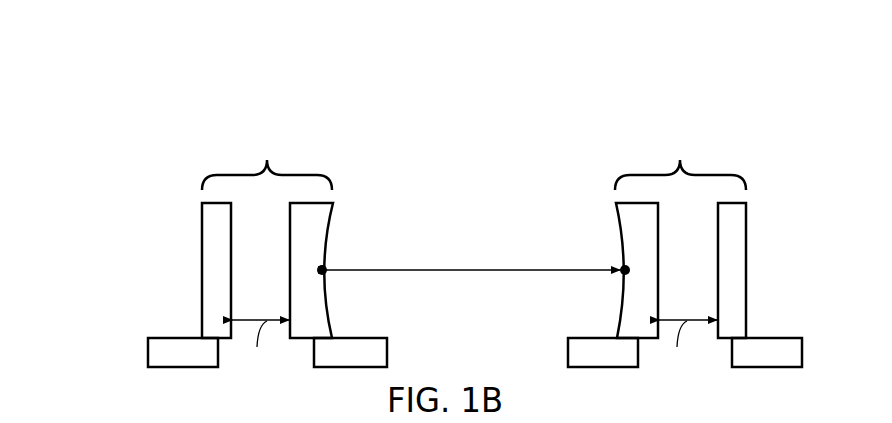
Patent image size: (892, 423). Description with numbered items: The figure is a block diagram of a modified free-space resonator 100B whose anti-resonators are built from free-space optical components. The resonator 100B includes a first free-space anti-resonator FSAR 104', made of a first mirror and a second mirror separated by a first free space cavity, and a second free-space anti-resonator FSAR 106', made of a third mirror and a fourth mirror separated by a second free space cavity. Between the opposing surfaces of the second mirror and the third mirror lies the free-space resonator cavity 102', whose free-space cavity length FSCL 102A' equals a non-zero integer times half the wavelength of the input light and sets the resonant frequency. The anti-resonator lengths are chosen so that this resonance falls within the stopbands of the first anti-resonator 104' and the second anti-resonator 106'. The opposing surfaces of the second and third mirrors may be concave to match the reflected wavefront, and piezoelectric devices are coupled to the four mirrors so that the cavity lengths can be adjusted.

The modified free-space resonator 100B is at (155, 110).
The first free-space anti-resonator (FSAR1) 104' is at (267, 238).
The second free-space anti-resonator (FSAR2) 106' is at (685, 238).
The free-space resonator cavity 102' is at (473, 199).
The free-space cavity length (FSCL) 102A' is at (473, 247).